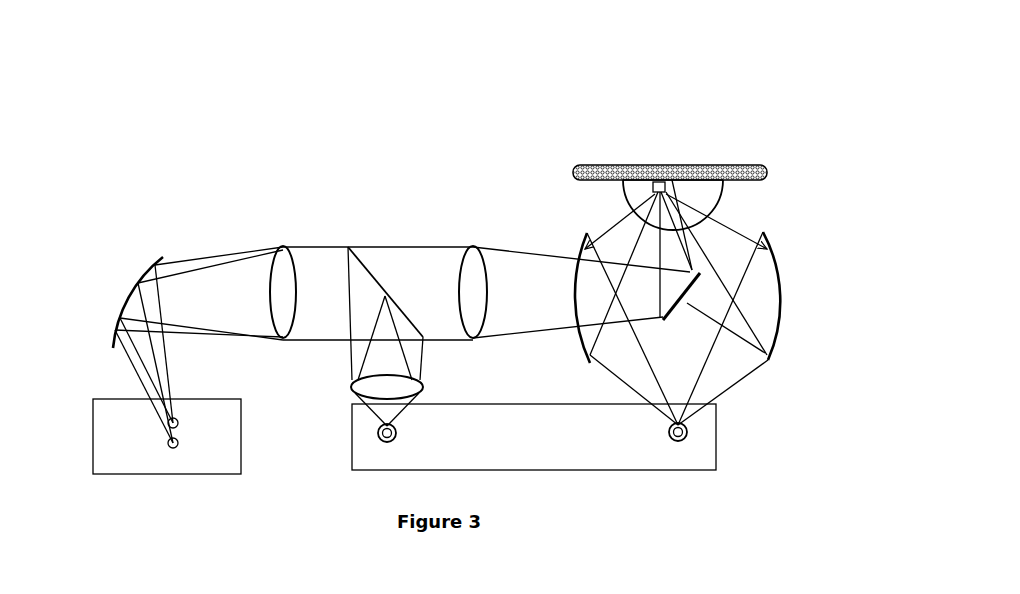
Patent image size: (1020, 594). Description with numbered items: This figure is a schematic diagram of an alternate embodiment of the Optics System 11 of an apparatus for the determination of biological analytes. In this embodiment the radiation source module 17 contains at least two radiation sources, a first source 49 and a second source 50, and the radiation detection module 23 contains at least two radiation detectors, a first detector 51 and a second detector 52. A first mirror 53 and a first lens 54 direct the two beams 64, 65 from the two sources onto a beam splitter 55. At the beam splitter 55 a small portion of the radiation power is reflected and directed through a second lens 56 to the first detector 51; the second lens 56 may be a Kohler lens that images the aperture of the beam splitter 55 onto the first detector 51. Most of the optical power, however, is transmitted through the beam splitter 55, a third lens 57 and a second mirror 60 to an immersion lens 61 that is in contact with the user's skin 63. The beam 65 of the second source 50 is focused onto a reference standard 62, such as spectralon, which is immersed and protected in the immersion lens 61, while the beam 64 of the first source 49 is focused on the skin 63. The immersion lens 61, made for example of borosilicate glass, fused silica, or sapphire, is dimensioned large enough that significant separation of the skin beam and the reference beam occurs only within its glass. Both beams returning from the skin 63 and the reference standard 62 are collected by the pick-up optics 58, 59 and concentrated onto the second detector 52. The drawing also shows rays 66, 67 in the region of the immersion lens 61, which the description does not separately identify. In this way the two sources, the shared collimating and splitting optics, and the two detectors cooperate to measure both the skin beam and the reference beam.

The Optics System 11 is at (450, 98).
The radiation source module 17 is at (93, 440).
The radiation detection module 23 is at (352, 440).
The Source "1" 49 is at (181, 444).
The Source "2" 50 is at (181, 423).
The Detector "1" 51 is at (400, 430).
The Detector "2" 52 is at (668, 430).
The first mirror 53 is at (170, 248).
The first lens 54 is at (298, 265).
The beam splitter 55 is at (373, 263).
The second lens 56 is at (425, 385).
The third lens 57 is at (472, 245).
The pick-up optics 58 is at (577, 338).
The pick-up optics 59 is at (778, 280).
The second mirror 60 is at (752, 378).
The immersion lens 61 is at (723, 197).
The reference standard 62 is at (653, 186).
The skin 63 is at (670, 165).
The beam 64 is at (188, 258).
The beam 65 is at (215, 262).
The light ray 66 is at (682, 208).
The light ray 67 is at (653, 202).